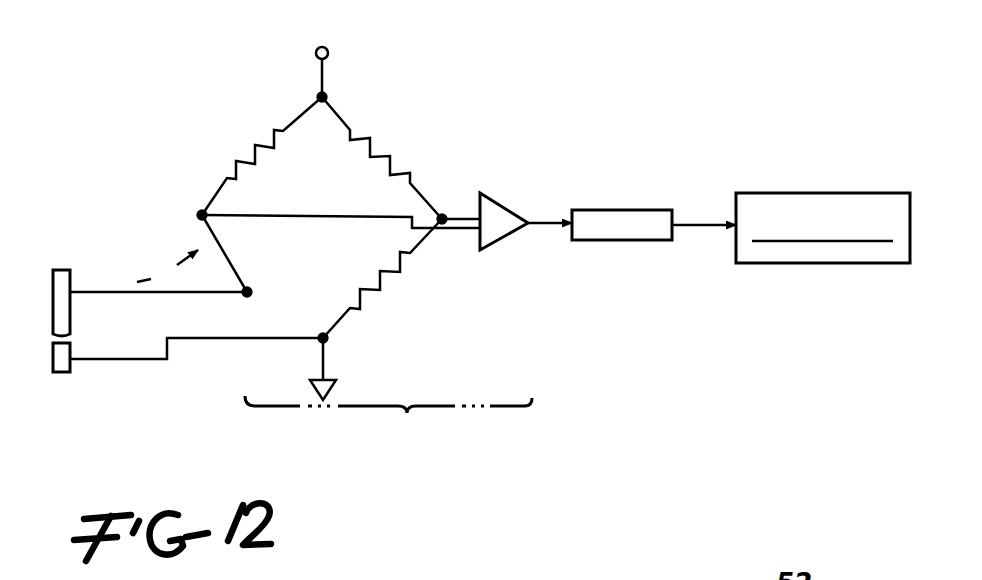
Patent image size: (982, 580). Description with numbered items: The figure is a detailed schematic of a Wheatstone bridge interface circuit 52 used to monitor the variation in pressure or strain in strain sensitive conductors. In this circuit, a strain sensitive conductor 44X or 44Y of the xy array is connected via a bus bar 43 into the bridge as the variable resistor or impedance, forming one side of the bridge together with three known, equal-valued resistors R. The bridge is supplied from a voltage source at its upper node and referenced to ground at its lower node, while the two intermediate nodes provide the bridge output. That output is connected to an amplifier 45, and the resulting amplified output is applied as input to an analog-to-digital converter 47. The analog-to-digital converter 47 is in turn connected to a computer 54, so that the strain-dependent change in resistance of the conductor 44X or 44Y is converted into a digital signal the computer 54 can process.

The Wheatstone bridge interface circuit 52 is at (460, 126).
The amplifier 45 is at (506, 207).
The analog-to-digital converter 47 is at (662, 184).
The computer 54 is at (829, 197).
The bus bar 43 is at (53, 318).
The conductor 44X is at (127, 235).
The conductor 44Y is at (196, 283).